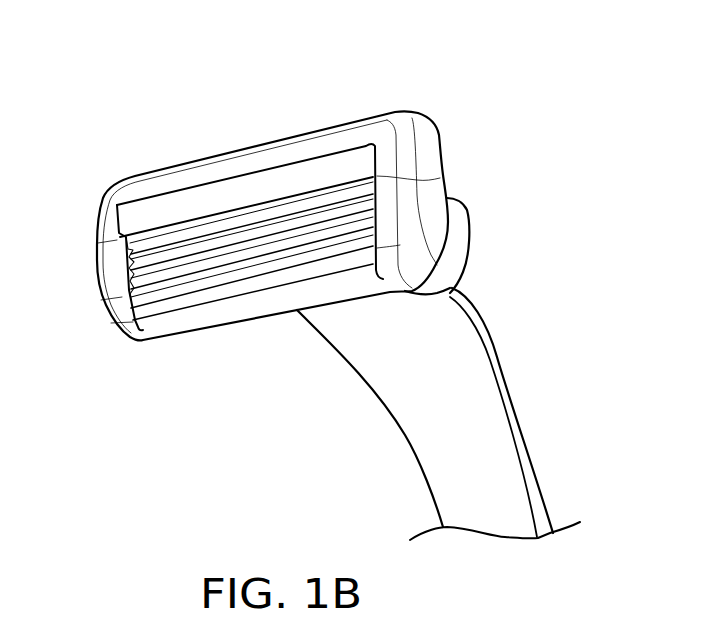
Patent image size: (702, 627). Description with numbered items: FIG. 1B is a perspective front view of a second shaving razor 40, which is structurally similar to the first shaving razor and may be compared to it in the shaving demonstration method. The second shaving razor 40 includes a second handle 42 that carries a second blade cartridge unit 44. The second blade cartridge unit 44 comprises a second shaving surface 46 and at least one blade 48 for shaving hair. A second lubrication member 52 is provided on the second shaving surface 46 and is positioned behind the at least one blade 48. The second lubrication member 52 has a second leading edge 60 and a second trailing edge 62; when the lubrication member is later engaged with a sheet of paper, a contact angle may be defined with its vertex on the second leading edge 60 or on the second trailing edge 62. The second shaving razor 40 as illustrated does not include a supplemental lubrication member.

The second shaving razor 40 is at (205, 70).
The second handle 42 is at (519, 438).
The second blade cartridge unit 44 is at (194, 158).
The second shaving surface 46 is at (106, 265).
The blade 48 is at (361, 216).
The second lubrication member 52 is at (308, 174).
The second leading edge 60 is at (343, 181).
The second trailing edge 62 is at (148, 199).